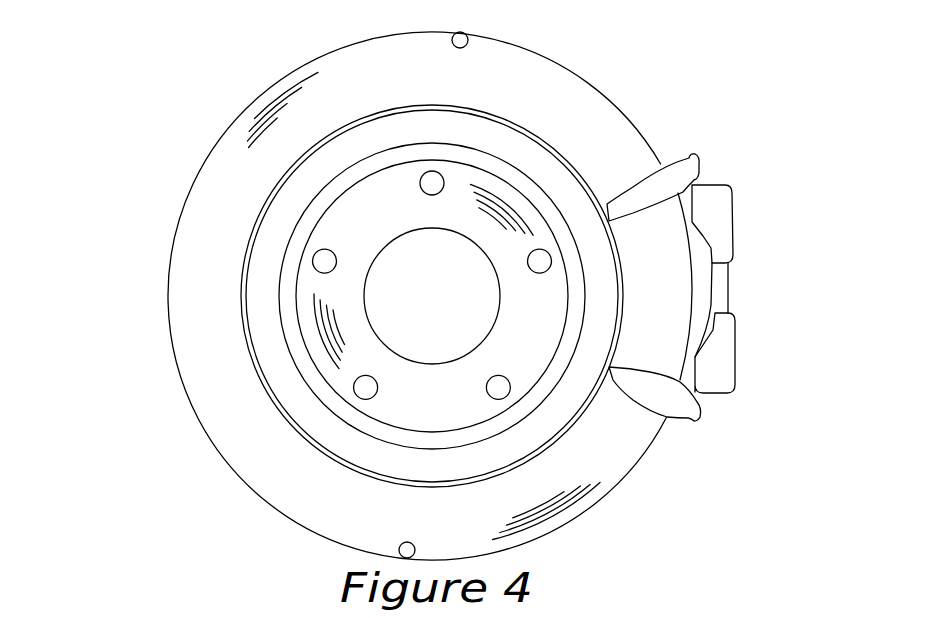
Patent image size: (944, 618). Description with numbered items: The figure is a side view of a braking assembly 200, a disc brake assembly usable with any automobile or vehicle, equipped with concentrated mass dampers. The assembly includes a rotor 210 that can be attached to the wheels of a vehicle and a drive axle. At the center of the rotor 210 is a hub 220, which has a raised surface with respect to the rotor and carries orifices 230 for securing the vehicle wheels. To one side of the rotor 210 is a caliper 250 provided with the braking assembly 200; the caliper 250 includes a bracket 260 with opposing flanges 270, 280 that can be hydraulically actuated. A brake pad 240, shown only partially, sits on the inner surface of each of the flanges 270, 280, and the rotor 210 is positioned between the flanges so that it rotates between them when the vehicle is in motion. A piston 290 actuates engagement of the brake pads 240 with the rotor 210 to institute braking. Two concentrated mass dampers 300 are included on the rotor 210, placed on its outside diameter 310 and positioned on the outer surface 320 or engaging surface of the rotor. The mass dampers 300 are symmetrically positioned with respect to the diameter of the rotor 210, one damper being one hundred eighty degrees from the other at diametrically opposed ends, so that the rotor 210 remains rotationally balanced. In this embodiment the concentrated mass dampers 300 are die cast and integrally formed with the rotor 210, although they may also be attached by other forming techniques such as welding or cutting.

The braking assembly 200 is at (178, 127).
The rotor 210 is at (588, 107).
The hub 220 is at (447, 216).
The orifices 230 is at (429, 193).
The brake pad 240 is at (640, 428).
The caliper 250 is at (754, 209).
The bracket 260 is at (667, 263).
The flange 270 is at (685, 403).
The flange 280 is at (720, 237).
The piston 290 is at (703, 300).
The concentrated mass dampers 300 is at (463, 33).
The outside diameter 310 is at (272, 82).
The outer surface 320 is at (421, 79).